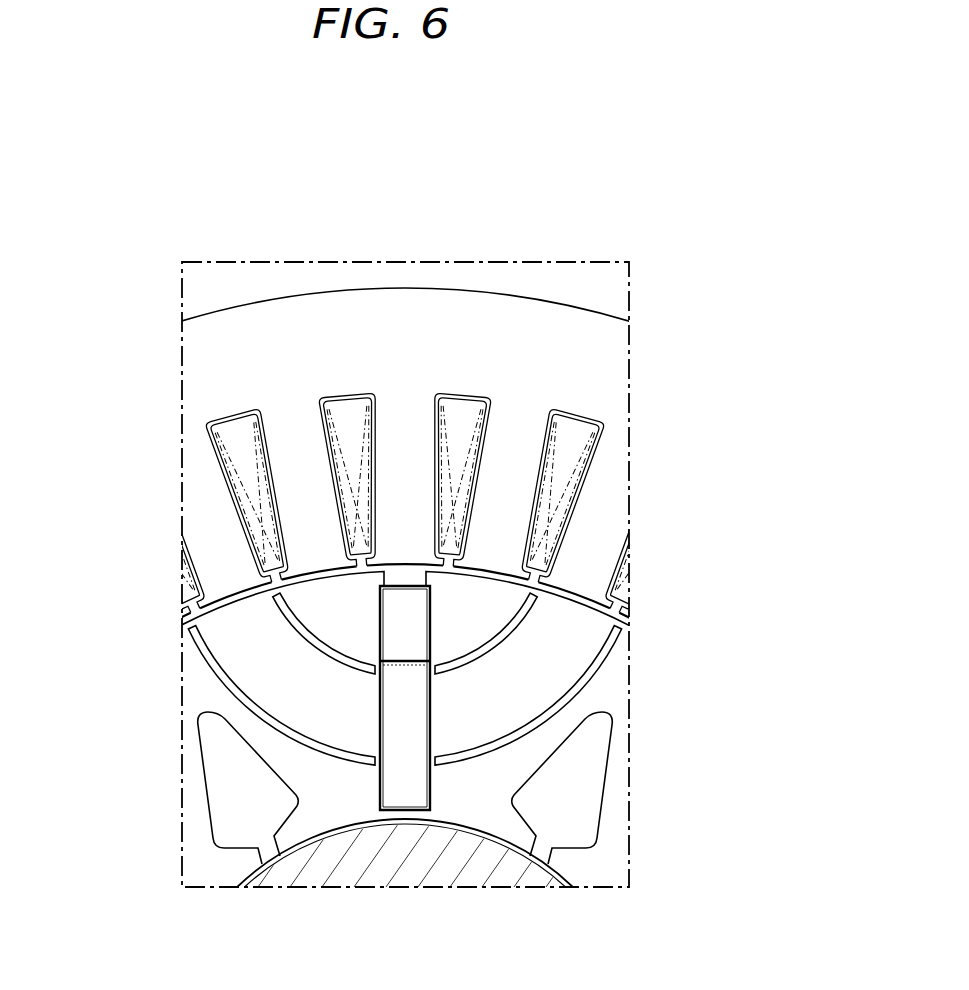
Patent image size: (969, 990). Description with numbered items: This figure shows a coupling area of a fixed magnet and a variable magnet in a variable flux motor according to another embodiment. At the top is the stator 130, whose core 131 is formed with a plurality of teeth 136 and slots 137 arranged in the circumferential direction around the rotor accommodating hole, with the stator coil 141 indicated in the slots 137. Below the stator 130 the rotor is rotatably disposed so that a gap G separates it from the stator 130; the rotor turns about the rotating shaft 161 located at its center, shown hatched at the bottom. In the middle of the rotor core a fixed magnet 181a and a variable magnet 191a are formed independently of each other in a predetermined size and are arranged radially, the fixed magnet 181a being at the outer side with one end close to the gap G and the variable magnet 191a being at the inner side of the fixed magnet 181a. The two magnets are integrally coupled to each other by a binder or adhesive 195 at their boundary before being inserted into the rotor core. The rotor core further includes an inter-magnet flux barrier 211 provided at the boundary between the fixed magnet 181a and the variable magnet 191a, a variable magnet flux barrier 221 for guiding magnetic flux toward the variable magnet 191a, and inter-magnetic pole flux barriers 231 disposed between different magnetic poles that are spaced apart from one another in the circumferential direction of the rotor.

The stator 130 is at (496, 147).
The stator core 131 is at (432, 190).
The teeth 136 is at (401, 467).
The slots 137 is at (349, 396).
The stator coil 141 is at (465, 397).
The gap G is at (574, 596).
The inter-magnet flux barrier 211 is at (298, 622).
The variable magnet flux barrier 221 is at (226, 672).
The inter-magnetic pole flux barriers 231 is at (218, 768).
The fixed magnet 181a is at (413, 625).
The binder or adhesive 195 is at (412, 663).
The variable magnet 191a is at (415, 722).
The rotating shaft 161 is at (397, 862).